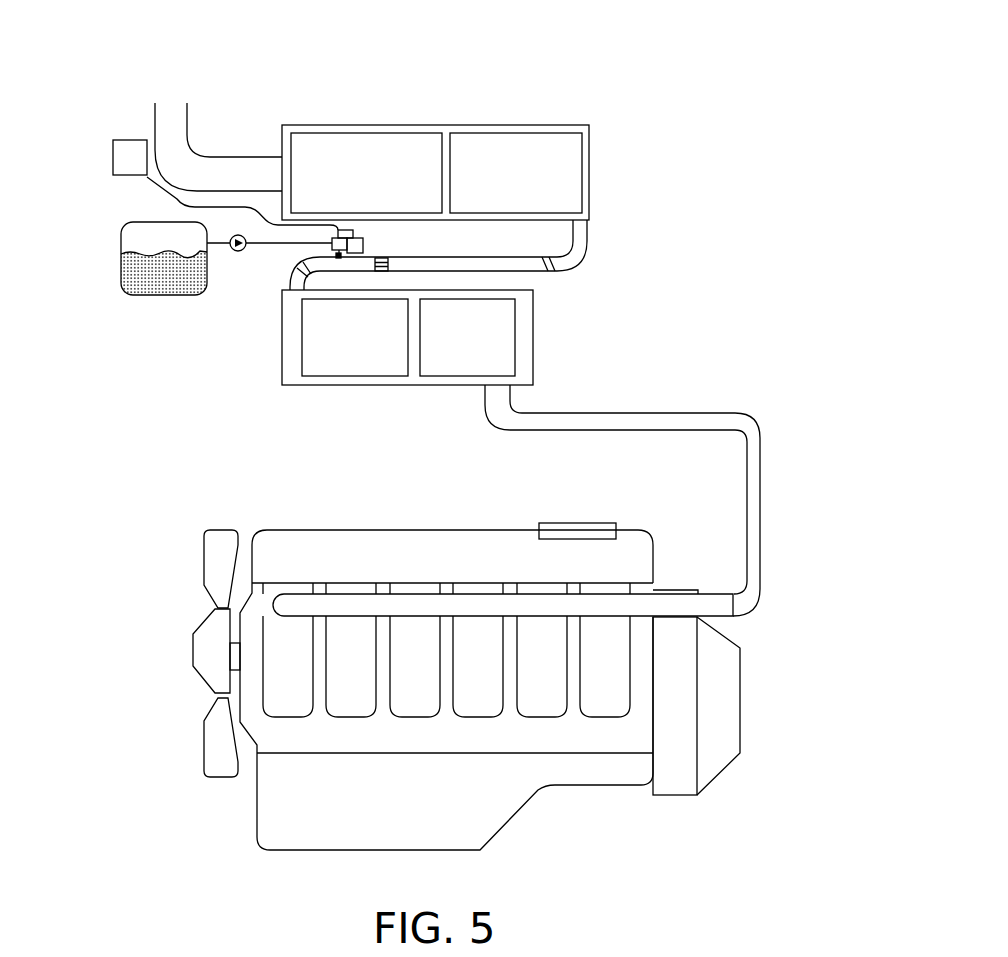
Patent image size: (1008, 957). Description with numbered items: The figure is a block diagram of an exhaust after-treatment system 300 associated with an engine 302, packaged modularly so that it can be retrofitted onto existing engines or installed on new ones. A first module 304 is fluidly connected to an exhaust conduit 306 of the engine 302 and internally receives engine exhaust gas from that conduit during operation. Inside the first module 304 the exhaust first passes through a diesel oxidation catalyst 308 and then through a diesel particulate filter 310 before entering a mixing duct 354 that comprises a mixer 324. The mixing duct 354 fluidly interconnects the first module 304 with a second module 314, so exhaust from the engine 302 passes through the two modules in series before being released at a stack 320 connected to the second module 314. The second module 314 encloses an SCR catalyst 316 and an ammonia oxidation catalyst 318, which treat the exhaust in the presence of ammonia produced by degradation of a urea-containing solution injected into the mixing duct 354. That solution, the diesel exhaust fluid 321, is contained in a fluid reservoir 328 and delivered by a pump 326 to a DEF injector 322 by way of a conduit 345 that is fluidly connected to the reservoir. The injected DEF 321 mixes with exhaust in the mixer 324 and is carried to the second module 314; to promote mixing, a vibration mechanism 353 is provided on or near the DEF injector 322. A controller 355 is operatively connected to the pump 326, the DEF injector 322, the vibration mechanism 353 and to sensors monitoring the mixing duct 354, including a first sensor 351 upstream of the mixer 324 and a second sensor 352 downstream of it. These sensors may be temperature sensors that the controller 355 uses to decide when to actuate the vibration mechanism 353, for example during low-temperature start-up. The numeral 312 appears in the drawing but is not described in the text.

The exhaust after-treatment system 300 is at (630, 56).
The engine 302 is at (758, 686).
The first module 304 is at (448, 361).
The exhaust conduit 306 is at (667, 417).
The diesel oxidation catalyst 308 is at (483, 338).
The diesel particulate filter 310 is at (348, 347).
The exhaust conduit 312 is at (580, 250).
The second module 314 is at (439, 135).
The SCR catalyst 316 is at (500, 178).
The ammonia oxidation catalyst 318 is at (348, 148).
The stack 320 is at (192, 170).
The diesel exhaust fluid 321 is at (162, 273).
The DEF injector 322 is at (299, 265).
The mixer 324 is at (383, 272).
The pump 326 is at (240, 252).
The fluid reservoir 328 is at (130, 241).
The conduit 345 is at (263, 243).
The first sensor 351 is at (307, 272).
The second sensor 352 is at (550, 272).
The vibration mechanism 353 is at (357, 245).
The mixing duct 354 is at (395, 250).
The controller 355 is at (128, 139).